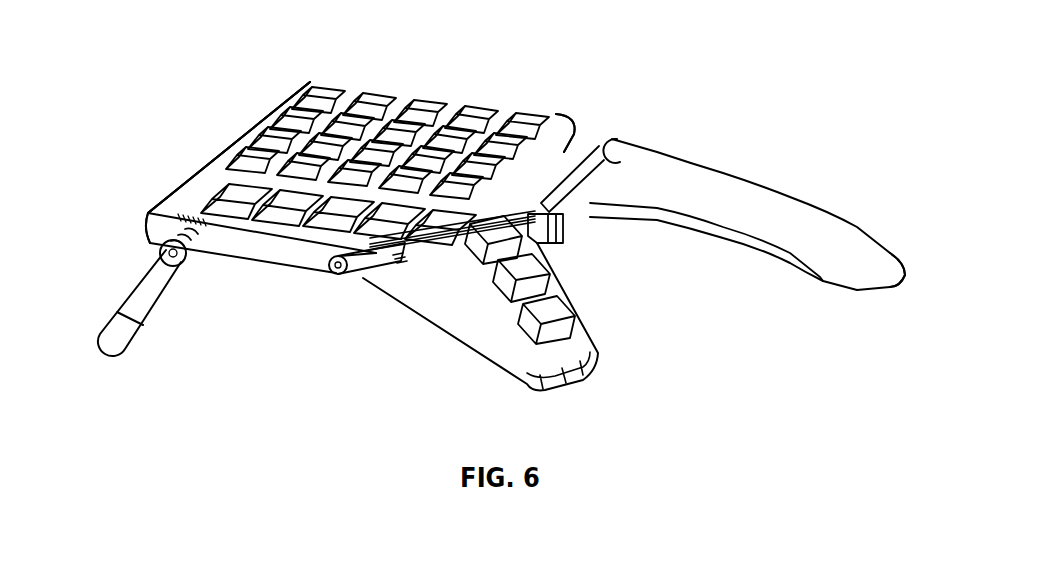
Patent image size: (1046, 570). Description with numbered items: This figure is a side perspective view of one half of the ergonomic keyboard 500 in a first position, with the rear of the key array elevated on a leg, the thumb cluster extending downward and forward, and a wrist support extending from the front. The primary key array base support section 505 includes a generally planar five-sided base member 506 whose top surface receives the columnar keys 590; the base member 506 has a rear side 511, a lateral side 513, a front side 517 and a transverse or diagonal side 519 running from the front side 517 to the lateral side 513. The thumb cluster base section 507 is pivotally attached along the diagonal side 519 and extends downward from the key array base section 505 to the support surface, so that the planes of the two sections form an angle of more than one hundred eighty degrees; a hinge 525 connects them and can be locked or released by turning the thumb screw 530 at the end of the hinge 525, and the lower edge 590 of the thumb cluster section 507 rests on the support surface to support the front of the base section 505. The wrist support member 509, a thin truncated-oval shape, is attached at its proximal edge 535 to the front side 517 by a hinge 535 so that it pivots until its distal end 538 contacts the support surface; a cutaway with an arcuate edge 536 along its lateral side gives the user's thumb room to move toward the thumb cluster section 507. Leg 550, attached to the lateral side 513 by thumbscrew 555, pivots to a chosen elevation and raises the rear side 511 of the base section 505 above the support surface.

The ergonomic keyboard 500 is at (848, 126).
The primary key array base support section 505 is at (252, 118).
The base member 506 is at (228, 150).
The thumb cluster base section 507 is at (460, 290).
The wrist support member 509 is at (723, 181).
The rear side 511 is at (156, 198).
The lateral side 513 is at (282, 258).
The front side 517 is at (568, 230).
The transverse or diagonal side 519 is at (377, 273).
The hinge 525 is at (483, 270).
The thumb screw 530 is at (347, 284).
The proximal edge / hinge 535 is at (617, 163).
The arcuate edge 536 is at (741, 240).
The distal end 538 is at (905, 285).
The leg 550 is at (137, 294).
The thumbscrew 555 is at (177, 264).
The keys / lower edge 590 is at (427, 103).